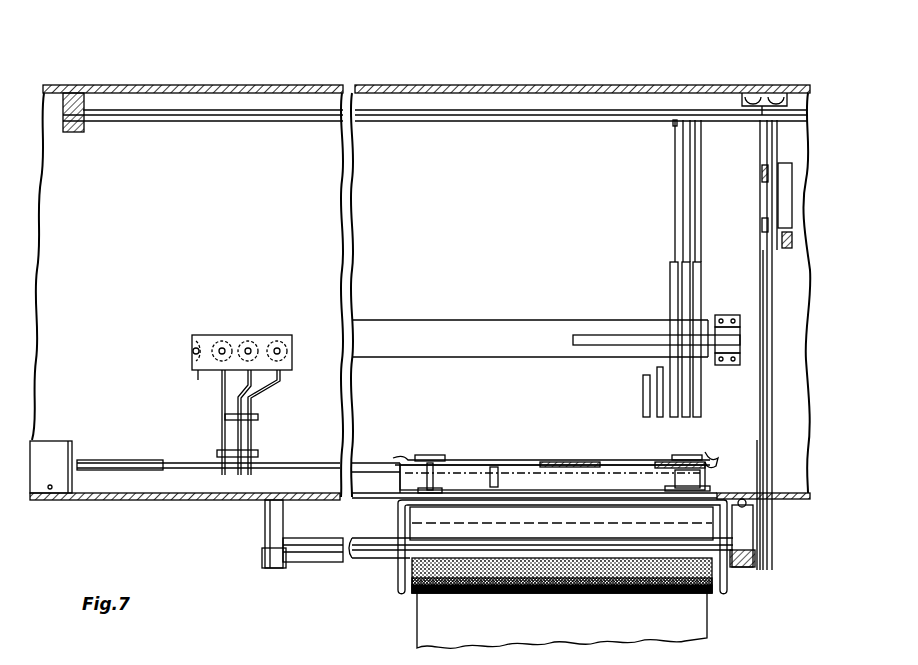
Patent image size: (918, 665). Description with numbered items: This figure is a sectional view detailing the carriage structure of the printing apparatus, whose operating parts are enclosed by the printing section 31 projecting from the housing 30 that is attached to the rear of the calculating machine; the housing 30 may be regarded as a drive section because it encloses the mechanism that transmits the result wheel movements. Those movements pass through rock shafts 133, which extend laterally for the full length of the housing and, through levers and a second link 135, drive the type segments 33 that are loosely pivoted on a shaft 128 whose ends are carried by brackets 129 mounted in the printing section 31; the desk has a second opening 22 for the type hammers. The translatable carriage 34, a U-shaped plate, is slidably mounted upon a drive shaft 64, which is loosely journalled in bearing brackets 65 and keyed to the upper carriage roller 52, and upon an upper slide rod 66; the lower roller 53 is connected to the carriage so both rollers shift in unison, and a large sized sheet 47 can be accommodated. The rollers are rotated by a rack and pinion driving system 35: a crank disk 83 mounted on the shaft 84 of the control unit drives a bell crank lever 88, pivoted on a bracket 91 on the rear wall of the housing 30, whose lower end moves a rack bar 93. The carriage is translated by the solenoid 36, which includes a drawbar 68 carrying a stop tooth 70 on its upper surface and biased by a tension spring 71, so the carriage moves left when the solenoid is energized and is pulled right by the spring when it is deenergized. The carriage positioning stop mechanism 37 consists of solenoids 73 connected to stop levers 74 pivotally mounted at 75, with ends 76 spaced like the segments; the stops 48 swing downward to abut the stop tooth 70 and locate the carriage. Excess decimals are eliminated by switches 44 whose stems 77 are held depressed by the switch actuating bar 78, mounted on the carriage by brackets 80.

The housing 30 is at (258, 85).
The printing section 31 is at (620, 152).
The rock shaft 133 is at (440, 123).
The bracket 91 is at (750, 94).
The second link 135 is at (680, 190).
The type segments 33 is at (704, 405).
The second opening 22 is at (462, 347).
The shaft 128 is at (604, 346).
The brackets 129 is at (730, 317).
The bell crank lever 88 is at (765, 201).
The rack and pinion driving system 35 is at (775, 418).
The rack bar 93 is at (773, 470).
The crank disk 83 is at (786, 164).
The shaft 84 is at (790, 248).
The carriage positioning stop mechanism 37 is at (222, 334).
The solenoids 73 is at (258, 335).
The stop levers 74 is at (276, 387).
The pivot 75 is at (222, 416).
The stops 48 is at (257, 437).
The stop tooth 70 is at (270, 465).
The ends 76 is at (222, 472).
The solenoid 36 is at (66, 438).
The drawbar 68 is at (368, 460).
The switches 44 is at (398, 480).
The brackets 80 is at (436, 482).
The switch actuating bar 78 is at (537, 459).
The switch stems 77 is at (637, 462).
The tension spring 71 is at (710, 455).
The translatable carriage 34 is at (394, 580).
The lower roller 53 is at (593, 526).
The drive shaft 64 is at (367, 541).
The upper slide rod 66 is at (313, 546).
The upper carriage roller 52 is at (478, 594).
The large sized sheet 47 is at (690, 620).
The bearing brackets 65 is at (745, 566).